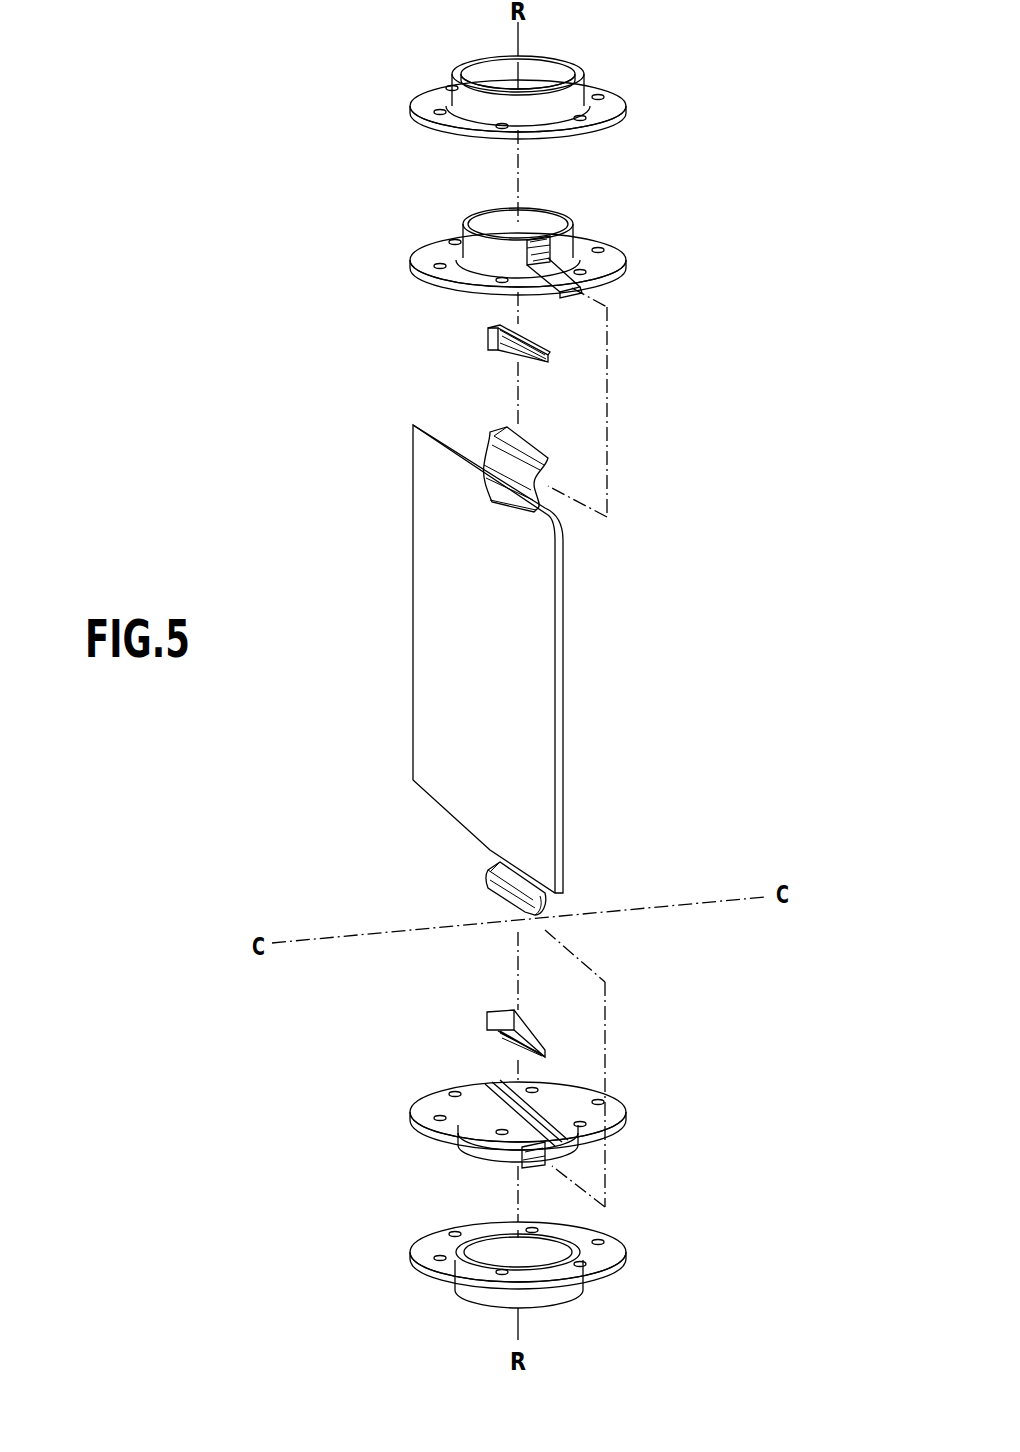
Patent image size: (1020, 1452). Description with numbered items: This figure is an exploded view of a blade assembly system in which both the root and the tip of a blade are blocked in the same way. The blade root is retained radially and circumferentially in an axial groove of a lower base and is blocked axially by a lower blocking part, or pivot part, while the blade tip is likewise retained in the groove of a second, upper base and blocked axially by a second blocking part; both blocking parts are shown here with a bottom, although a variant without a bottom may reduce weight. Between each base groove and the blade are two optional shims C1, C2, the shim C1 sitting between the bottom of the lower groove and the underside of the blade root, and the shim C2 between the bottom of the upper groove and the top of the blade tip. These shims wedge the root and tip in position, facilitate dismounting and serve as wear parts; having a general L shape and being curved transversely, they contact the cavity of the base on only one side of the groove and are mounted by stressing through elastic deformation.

The shim C2 is at (486, 335).
The shim C1 is at (483, 1008).